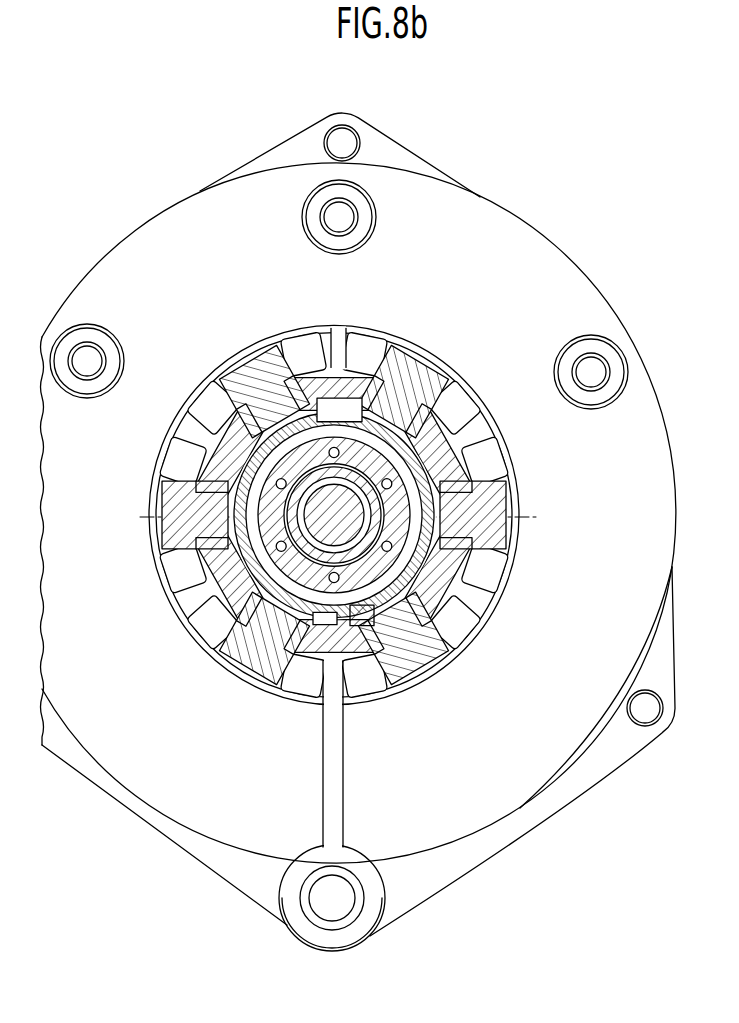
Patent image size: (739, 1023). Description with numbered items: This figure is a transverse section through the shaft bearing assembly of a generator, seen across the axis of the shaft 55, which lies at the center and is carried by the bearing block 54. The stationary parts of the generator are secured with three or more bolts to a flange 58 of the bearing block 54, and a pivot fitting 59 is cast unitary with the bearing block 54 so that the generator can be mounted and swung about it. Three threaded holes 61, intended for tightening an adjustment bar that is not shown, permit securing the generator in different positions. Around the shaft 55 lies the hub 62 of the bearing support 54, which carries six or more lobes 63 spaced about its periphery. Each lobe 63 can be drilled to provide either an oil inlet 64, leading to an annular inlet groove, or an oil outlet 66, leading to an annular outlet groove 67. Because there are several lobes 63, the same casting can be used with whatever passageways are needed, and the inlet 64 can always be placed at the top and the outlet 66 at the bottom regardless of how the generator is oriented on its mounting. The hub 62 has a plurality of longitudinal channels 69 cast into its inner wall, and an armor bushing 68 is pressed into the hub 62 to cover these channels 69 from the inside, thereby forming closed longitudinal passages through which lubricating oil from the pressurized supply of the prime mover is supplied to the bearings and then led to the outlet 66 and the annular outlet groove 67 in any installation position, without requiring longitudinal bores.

The bearing block 54 is at (548, 283).
The shaft 55 is at (334, 514).
The flange 58 is at (380, 147).
The pivot fitting 59 is at (363, 923).
The threaded holes 61 is at (318, 218).
The hub 62 is at (460, 572).
The lobes 63 is at (413, 373).
The oil inlet 64 is at (260, 378).
The oil outlet 66 is at (413, 658).
The annular outlet groove 67 is at (368, 617).
The armor bushing 68 is at (243, 657).
The longitudinal channels 69 is at (350, 408).